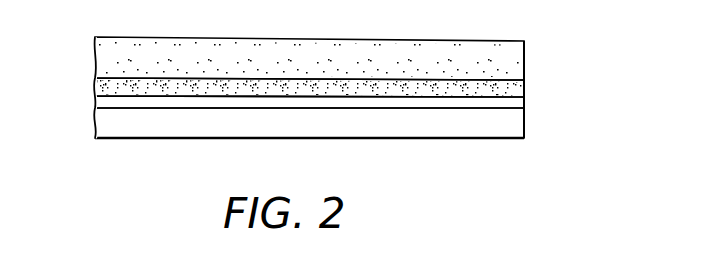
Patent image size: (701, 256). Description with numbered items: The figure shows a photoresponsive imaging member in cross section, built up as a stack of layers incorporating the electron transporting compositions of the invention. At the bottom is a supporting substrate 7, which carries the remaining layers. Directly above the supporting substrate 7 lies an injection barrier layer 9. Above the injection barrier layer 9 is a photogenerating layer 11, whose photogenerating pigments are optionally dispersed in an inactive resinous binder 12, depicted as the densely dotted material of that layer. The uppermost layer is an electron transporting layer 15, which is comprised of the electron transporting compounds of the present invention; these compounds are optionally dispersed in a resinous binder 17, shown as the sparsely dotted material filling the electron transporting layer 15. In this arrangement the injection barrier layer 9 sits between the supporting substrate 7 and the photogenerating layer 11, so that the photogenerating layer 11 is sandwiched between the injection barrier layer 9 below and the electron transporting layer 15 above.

The supporting substrate 7 is at (525, 127).
The injection barrier layer 9 is at (525, 101).
The photogenerating layer 11 is at (525, 85).
The inactive resinous binder 12 is at (112, 90).
The electron transporting layer 15 is at (525, 58).
The resinous binder 17 is at (117, 51).